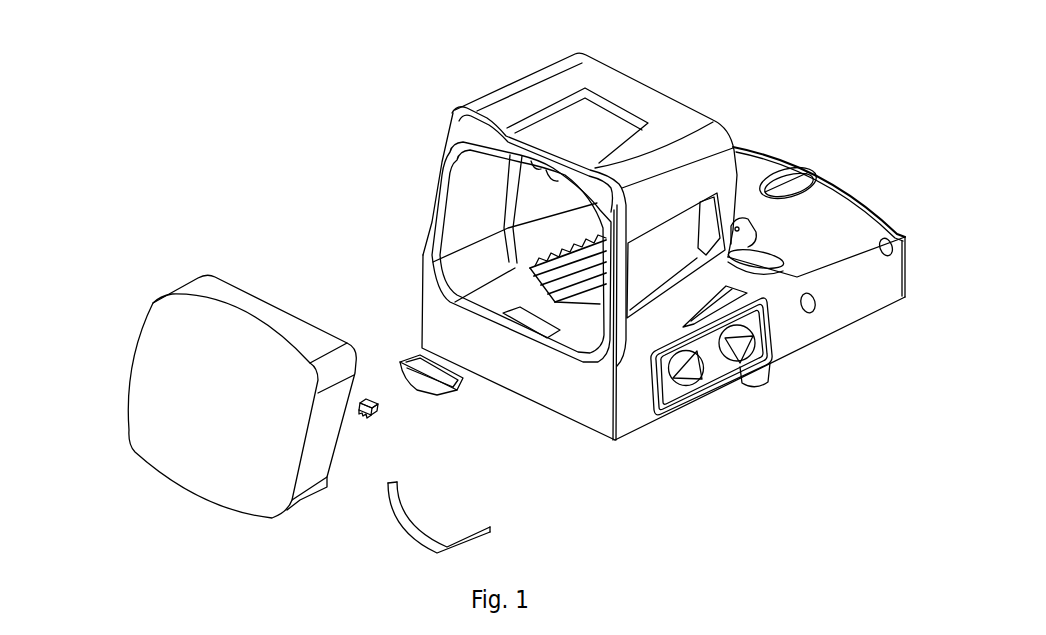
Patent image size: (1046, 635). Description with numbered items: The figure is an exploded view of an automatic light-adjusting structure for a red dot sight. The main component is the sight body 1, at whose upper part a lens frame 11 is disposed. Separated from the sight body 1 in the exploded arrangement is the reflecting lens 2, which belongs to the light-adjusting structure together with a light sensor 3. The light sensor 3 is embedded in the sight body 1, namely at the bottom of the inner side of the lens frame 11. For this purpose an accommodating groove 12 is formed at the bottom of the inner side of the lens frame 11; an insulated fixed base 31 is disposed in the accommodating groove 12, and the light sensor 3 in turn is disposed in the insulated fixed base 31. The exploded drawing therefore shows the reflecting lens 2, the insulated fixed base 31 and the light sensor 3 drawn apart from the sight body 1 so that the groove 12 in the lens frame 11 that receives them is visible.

The sight body 1 is at (800, 333).
The lens frame 11 is at (633, 93).
The accommodating groove 12 is at (518, 309).
The reflecting lens 2 is at (150, 308).
The light sensor 3 is at (378, 412).
The insulated fixed base 31 is at (400, 360).